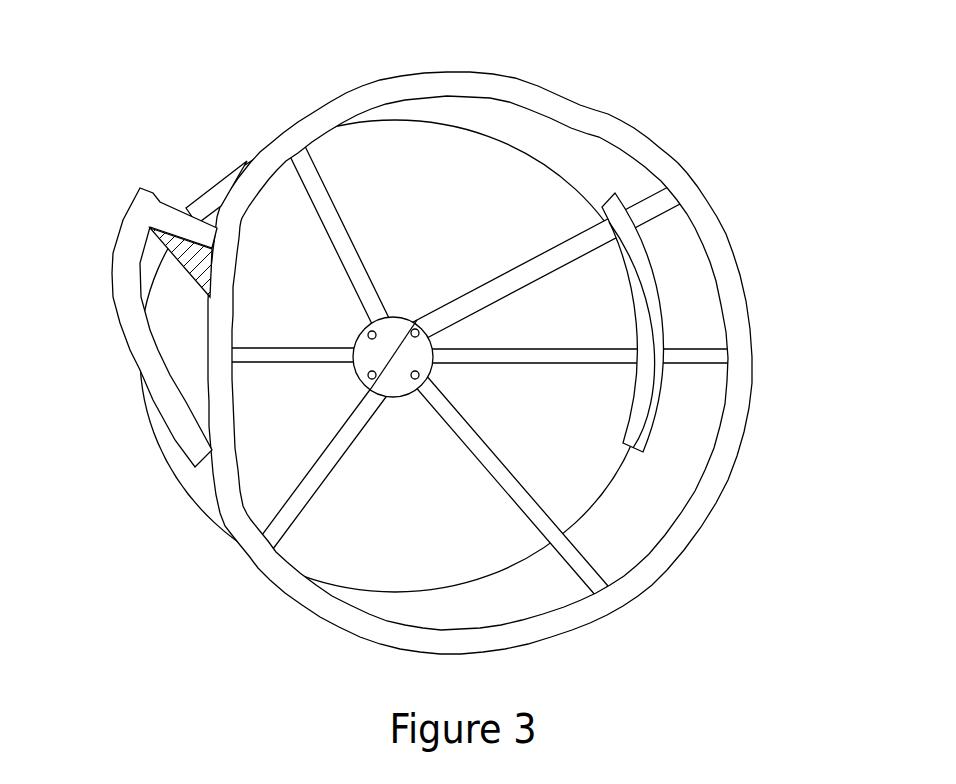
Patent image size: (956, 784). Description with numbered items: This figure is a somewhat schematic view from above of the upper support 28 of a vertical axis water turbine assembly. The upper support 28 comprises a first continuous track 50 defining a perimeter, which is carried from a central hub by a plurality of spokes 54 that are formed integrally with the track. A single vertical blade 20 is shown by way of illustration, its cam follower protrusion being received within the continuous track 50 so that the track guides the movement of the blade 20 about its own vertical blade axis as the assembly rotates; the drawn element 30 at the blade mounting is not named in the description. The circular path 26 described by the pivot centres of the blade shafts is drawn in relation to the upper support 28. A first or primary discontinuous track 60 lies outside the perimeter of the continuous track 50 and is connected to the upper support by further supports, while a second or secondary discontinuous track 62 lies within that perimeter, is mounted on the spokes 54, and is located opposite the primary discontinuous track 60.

The vertical blade 20 is at (190, 260).
The circular path 26 is at (196, 506).
The upper support 28 is at (748, 92).
The strut 30 is at (210, 207).
The first continuous track 50 is at (604, 106).
The spokes 54 is at (483, 440).
The first discontinuous track 60 is at (112, 297).
The second discontinuous track 62 is at (633, 452).